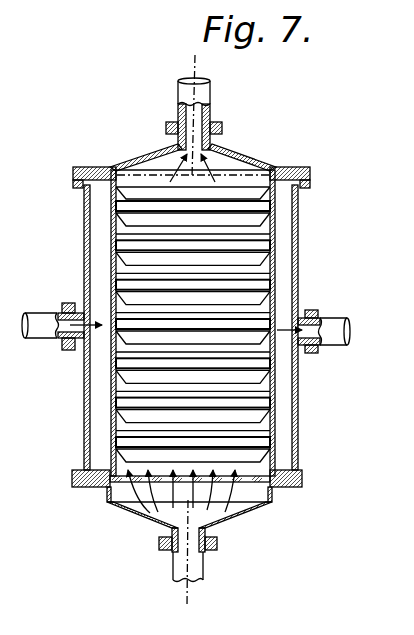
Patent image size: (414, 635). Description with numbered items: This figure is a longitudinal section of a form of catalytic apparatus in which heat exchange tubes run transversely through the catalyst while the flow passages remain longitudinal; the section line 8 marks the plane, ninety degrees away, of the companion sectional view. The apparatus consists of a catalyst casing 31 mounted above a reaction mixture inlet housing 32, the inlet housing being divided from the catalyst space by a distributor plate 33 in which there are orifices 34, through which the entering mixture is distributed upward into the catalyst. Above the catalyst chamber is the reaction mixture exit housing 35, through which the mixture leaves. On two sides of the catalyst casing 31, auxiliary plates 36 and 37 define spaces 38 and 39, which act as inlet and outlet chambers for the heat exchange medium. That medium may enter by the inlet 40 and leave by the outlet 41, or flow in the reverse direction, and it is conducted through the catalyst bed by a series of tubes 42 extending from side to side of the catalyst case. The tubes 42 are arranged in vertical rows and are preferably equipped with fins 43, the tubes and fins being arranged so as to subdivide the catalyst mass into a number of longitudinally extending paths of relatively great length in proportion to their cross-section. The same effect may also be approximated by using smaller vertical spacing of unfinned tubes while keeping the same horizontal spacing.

The section line 8- 8 is at (176, 65).
The catalyst casing 31 is at (275, 237).
The reaction mixture inlet housing 32 is at (248, 520).
The distributor plate 33 is at (302, 481).
The orifices 34 is at (262, 500).
The reaction mixture exit housing 35 is at (232, 153).
The auxiliary plate 36 is at (85, 238).
The auxiliary plate 37 is at (298, 270).
The space 38 is at (287, 302).
The space 39 is at (100, 277).
The heat exchange medium inlet 40 is at (47, 329).
The heat exchange medium outlet 41 is at (349, 330).
The tubes 42 is at (272, 445).
The fins 43 is at (247, 222).